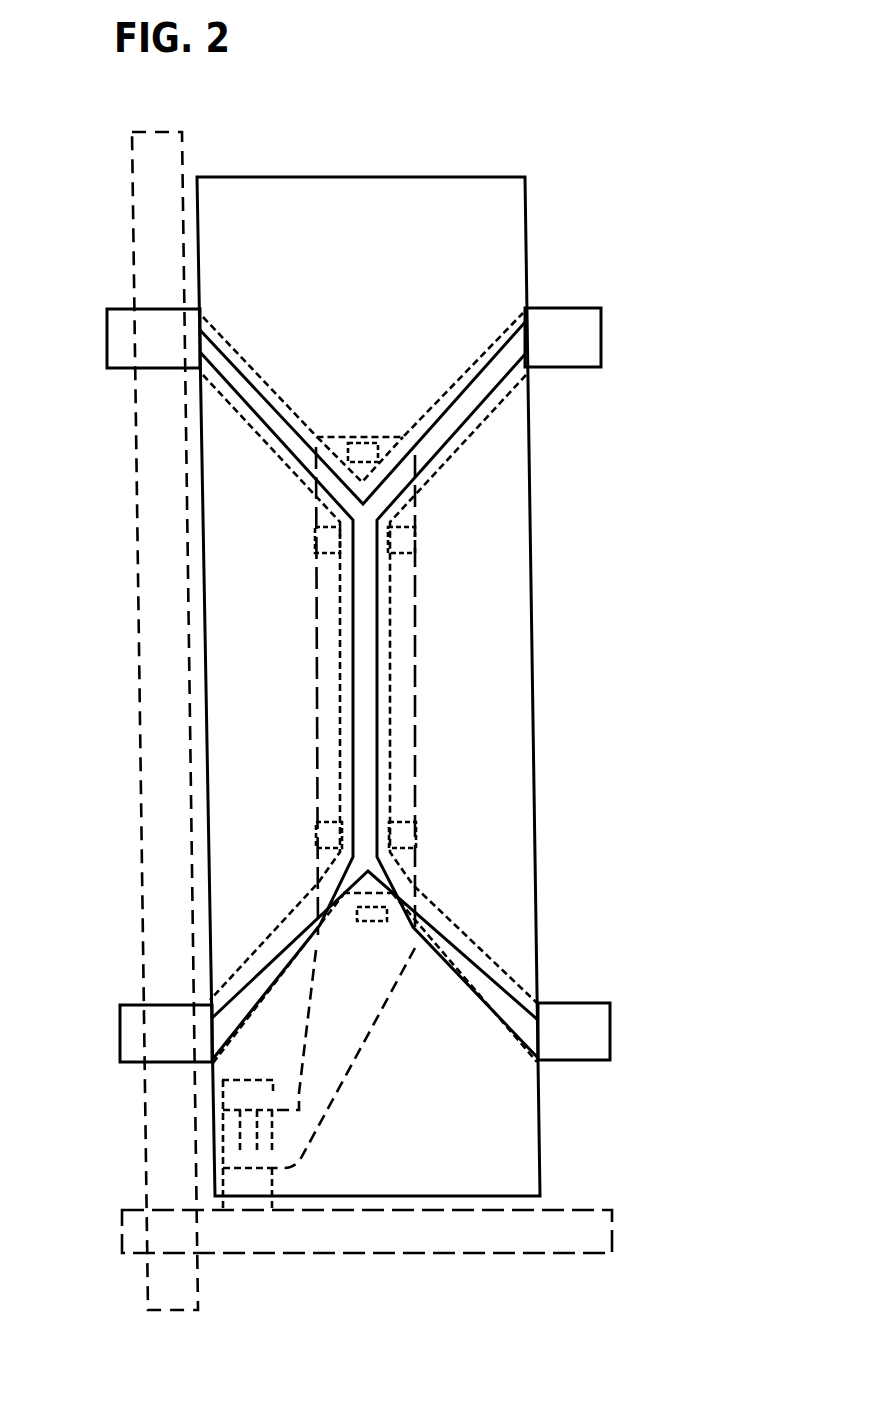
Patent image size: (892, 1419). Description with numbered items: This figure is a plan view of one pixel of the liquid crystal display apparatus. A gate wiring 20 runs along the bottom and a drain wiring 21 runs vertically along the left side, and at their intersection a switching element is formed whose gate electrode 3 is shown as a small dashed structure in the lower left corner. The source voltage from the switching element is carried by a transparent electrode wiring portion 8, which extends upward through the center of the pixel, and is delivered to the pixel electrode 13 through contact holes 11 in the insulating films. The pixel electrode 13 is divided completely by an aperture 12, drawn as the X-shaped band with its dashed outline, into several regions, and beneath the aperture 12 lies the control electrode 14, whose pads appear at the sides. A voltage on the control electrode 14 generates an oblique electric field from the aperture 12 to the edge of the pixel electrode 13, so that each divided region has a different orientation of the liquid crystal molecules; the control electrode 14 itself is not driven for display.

The gate electrode 3 is at (240, 1097).
The electrode wiring portion 8 is at (398, 703).
The contact hole 11 is at (413, 830).
The aperture 12 is at (487, 415).
The pixel electrode 13 is at (493, 215).
The control electrode 14 is at (587, 337).
The gate wiring 20 is at (610, 1225).
The drain wiring 21 is at (155, 485).